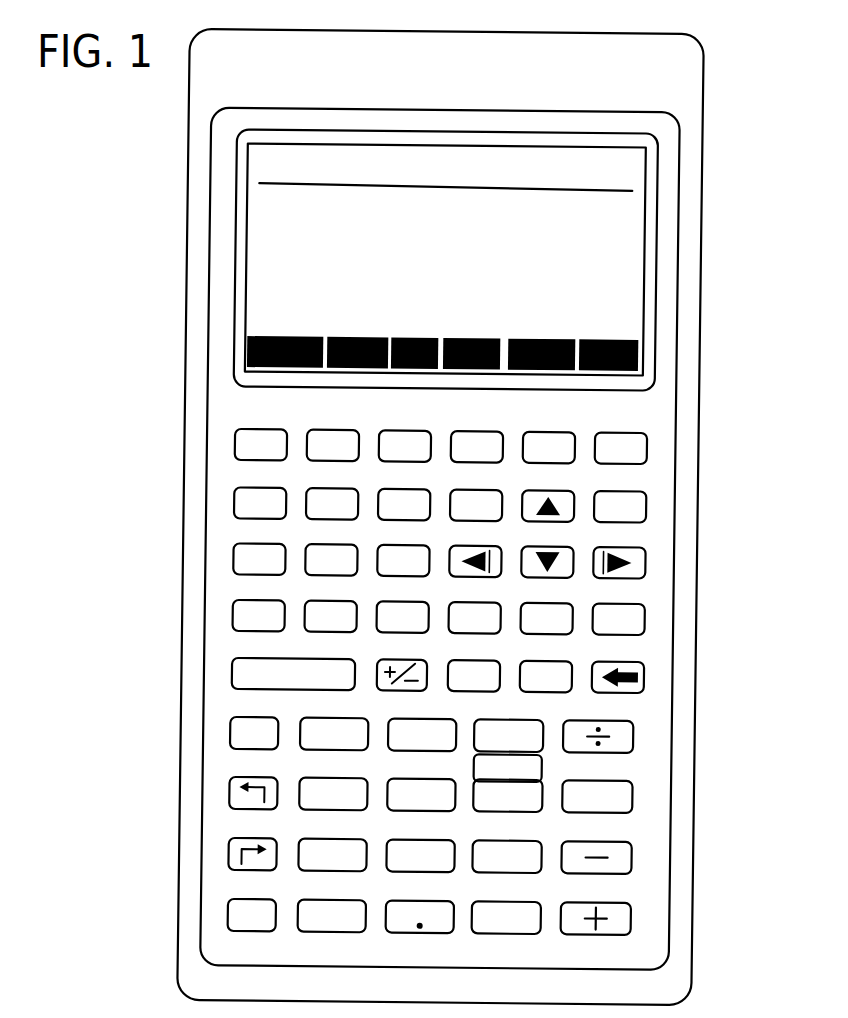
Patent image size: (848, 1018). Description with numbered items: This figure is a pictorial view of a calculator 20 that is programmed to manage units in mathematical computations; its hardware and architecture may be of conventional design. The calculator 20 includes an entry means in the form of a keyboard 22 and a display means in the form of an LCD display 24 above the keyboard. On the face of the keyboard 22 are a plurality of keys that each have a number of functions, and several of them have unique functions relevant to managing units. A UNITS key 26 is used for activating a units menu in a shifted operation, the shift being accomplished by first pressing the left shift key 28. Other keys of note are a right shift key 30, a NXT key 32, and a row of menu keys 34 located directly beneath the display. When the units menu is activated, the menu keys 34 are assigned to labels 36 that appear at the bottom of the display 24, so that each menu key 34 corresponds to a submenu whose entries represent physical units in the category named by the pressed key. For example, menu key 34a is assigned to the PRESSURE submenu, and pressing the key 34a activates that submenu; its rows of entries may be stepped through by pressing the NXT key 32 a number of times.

The calculator 20 is at (145, 153).
The keyboard 22 is at (220, 594).
The LCD display 24 is at (368, 118).
The UNITS key 26 is at (546, 767).
The left shift key 28 is at (232, 795).
The right shift key 30 is at (232, 850).
The NXT key 32 is at (646, 503).
The row of menu keys 34 is at (659, 485).
The menu key 34a is at (472, 431).
The labels 36 is at (655, 381).